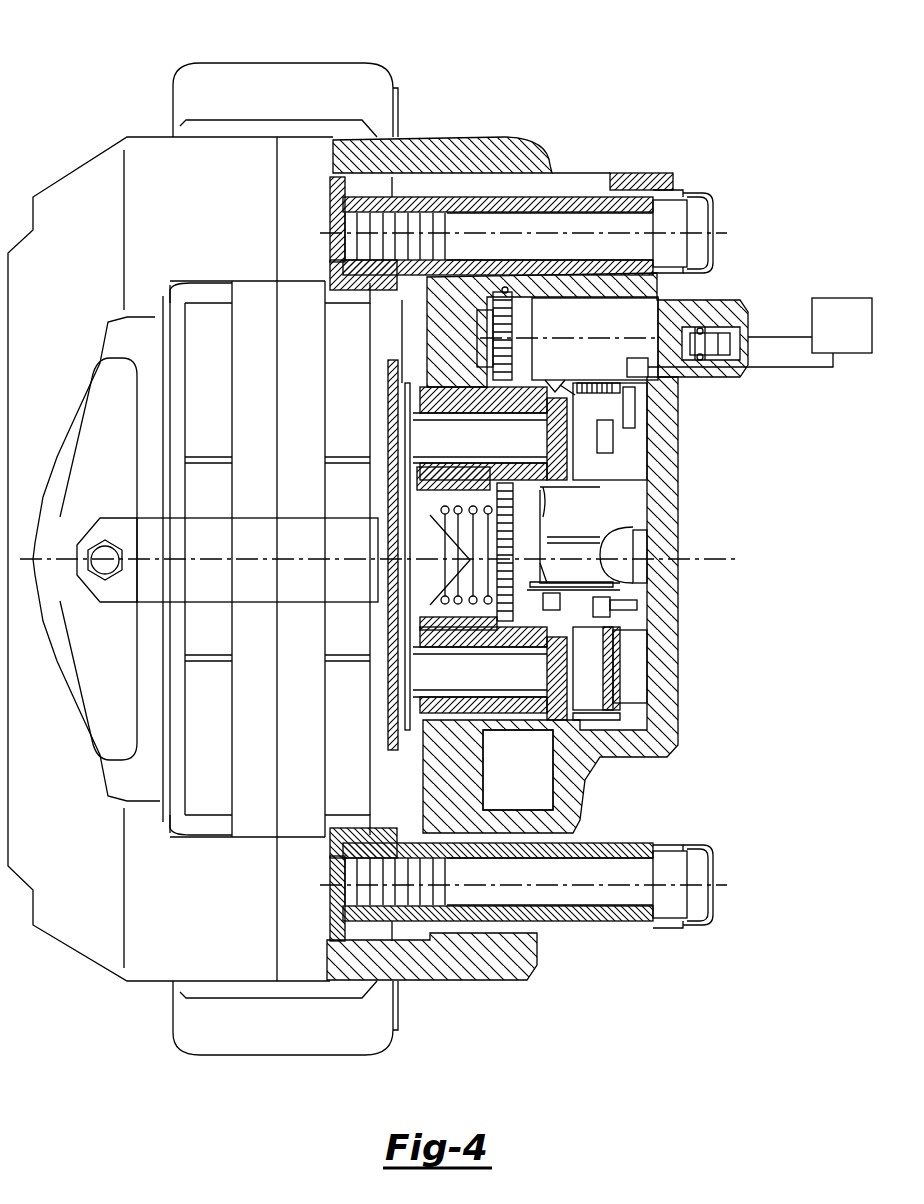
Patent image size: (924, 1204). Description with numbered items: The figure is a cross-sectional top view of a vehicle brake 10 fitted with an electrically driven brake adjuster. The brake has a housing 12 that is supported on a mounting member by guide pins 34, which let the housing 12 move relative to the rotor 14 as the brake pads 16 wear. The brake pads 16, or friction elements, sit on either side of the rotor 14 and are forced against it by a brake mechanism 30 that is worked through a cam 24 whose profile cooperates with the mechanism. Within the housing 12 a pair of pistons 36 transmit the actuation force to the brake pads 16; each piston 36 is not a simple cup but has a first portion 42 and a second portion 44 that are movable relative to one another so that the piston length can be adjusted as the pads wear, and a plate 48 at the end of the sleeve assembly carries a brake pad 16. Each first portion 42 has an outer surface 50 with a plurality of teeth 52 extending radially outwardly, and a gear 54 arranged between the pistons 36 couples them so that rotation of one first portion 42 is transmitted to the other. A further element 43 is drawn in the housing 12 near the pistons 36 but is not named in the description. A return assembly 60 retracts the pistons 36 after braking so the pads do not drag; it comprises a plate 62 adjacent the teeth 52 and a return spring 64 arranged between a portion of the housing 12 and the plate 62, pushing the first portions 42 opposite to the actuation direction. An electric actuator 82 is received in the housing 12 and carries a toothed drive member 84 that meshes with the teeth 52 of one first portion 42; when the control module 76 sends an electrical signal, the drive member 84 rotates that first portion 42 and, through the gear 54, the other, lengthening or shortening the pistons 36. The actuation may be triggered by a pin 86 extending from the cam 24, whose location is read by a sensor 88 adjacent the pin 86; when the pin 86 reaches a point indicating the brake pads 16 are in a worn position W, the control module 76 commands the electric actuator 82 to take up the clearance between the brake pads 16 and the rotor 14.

The vehicle brake 10 is at (447, 90).
The housing 12 is at (500, 138).
The rotor 14 is at (266, 680).
The brake pads 16 is at (218, 362).
The cam 24 is at (670, 447).
The brake mechanism 30 is at (492, 745).
The guide pins 34 is at (680, 203).
The pistons 36 is at (550, 383).
The first portion 42 is at (567, 390).
The bearing block 43 is at (627, 457).
The second portion 44 is at (420, 483).
The plate 48 is at (397, 410).
The outer surface 50 is at (520, 387).
The teeth 52 is at (490, 433).
The gear 54 is at (510, 540).
The return assembly 60 is at (418, 647).
The plate 62 is at (543, 487).
The return spring 64 is at (462, 523).
The control module 76 is at (845, 298).
The electric actuator 82 is at (650, 307).
The drive member 84 is at (505, 288).
The pin 86 is at (613, 410).
The sensor 88 is at (640, 363).
The worn position W is at (315, 818).